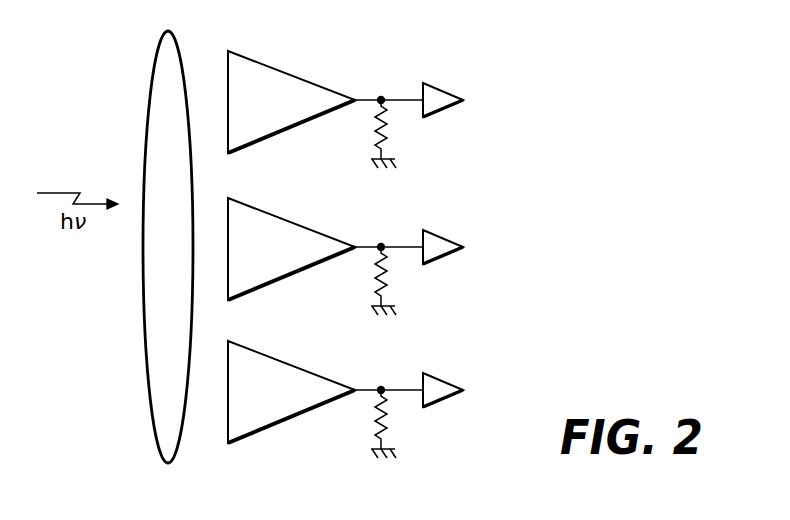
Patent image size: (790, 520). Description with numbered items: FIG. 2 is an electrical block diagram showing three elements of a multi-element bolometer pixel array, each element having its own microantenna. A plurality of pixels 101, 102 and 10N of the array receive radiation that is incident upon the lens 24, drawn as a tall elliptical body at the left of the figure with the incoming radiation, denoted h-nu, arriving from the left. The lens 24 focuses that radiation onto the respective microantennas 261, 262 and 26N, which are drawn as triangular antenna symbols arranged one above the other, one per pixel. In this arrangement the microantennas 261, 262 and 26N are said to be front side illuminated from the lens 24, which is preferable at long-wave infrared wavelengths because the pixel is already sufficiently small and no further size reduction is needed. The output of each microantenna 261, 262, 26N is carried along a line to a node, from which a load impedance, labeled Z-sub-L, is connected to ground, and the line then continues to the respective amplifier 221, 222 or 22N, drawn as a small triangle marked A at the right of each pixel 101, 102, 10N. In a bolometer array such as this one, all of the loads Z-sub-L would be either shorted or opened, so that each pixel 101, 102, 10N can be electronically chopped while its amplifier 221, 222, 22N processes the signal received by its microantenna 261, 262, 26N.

The lens 24 is at (177, 41).
The microantenna 261 is at (302, 78).
The microantenna 262 is at (302, 225).
The microantenna 26N is at (302, 368).
The pixel 101 is at (385, 74).
The pixel 102 is at (414, 212).
The pixel 10N is at (414, 355).
The amplifier 221 is at (440, 86).
The amplifier 222 is at (440, 233).
The amplifier 22N is at (440, 376).